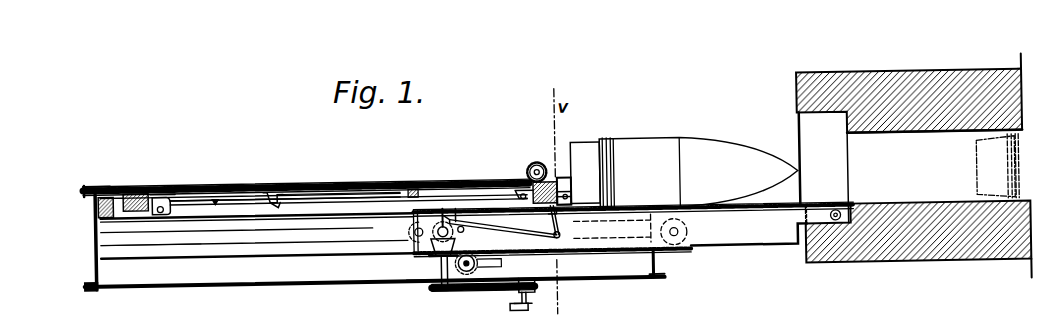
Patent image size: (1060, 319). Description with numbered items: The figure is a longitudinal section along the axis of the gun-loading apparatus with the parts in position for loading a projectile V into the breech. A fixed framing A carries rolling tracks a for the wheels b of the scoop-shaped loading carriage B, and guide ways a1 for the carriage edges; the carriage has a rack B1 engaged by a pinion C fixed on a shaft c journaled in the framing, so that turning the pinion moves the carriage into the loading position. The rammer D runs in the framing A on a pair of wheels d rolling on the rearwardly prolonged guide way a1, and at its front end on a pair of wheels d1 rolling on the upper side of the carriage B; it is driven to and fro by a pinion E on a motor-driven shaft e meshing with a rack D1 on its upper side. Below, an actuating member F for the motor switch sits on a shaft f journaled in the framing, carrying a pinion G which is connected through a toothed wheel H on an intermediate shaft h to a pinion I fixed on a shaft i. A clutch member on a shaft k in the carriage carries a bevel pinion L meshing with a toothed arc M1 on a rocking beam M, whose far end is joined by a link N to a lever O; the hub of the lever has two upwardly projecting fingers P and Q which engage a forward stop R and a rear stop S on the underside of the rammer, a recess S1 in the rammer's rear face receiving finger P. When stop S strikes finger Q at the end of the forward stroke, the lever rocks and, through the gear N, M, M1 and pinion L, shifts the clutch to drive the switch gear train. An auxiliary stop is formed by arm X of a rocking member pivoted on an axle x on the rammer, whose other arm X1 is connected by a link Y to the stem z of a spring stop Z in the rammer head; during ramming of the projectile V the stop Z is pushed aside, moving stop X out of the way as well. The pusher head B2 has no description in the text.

The fixed framing A is at (232, 276).
The rolling tracks a is at (172, 268).
The guide ways a1 is at (133, 221).
The loading carriage B is at (710, 248).
The rack B1 is at (617, 260).
The pusher head B2 is at (570, 187).
The wheels b is at (688, 236).
The pinion C is at (466, 284).
The shaft c is at (470, 270).
The rammer D is at (215, 204).
The rack D1 is at (160, 193).
The wheels d is at (172, 201).
The wheels d1 is at (527, 204).
The pinion E is at (533, 174).
The shaft e is at (538, 170).
The actuating member F is at (517, 296).
The shaft f is at (542, 301).
The pinion G is at (530, 291).
The toothed wheel H is at (493, 295).
The intermediate shaft h is at (498, 277).
The pinion I is at (440, 297).
The shaft i is at (425, 285).
The shaft k is at (458, 233).
The bevel pinion L is at (430, 252).
The rocking beam M is at (441, 233).
The toothed arc M1 is at (432, 246).
The link N is at (460, 229).
The lever O is at (559, 244).
The finger P is at (537, 236).
The finger Q is at (556, 224).
The forward stop R is at (571, 193).
The rear stop S is at (142, 196).
The recess S1 is at (130, 191).
The projectile V is at (658, 160).
The arm X is at (295, 194).
The arm X1 is at (268, 195).
The axle x is at (278, 205).
The link Y is at (343, 199).
The spring stop Z is at (571, 195).
The stem z is at (455, 222).